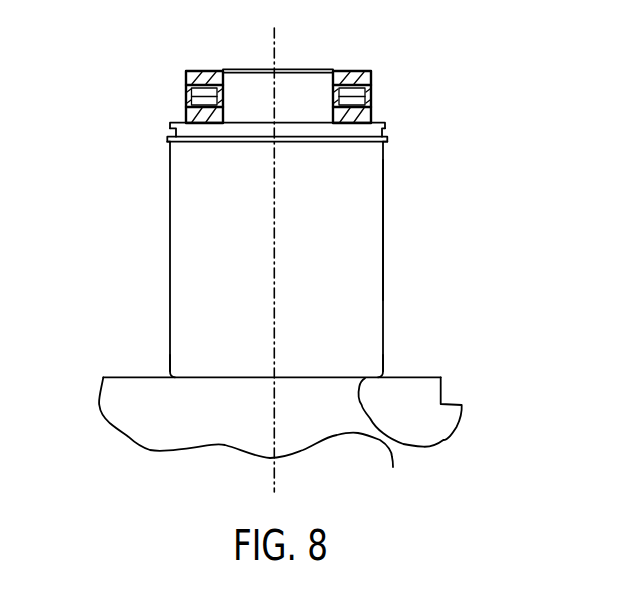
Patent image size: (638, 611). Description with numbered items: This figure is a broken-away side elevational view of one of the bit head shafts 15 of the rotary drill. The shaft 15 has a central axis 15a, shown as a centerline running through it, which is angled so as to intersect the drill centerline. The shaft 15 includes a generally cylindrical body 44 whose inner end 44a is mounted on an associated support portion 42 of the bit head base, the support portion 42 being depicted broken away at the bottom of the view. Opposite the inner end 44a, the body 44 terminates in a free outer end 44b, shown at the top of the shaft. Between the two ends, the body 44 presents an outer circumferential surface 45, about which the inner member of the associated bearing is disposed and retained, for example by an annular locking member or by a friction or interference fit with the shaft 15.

The shaft 15 is at (142, 173).
The central axis 15a is at (275, 42).
The support portion 42 is at (425, 397).
The cylindrical body 44 is at (198, 272).
The inner end 44a is at (286, 428).
The outer end 44b is at (320, 69).
The outer circumferential surface 45 is at (383, 207).